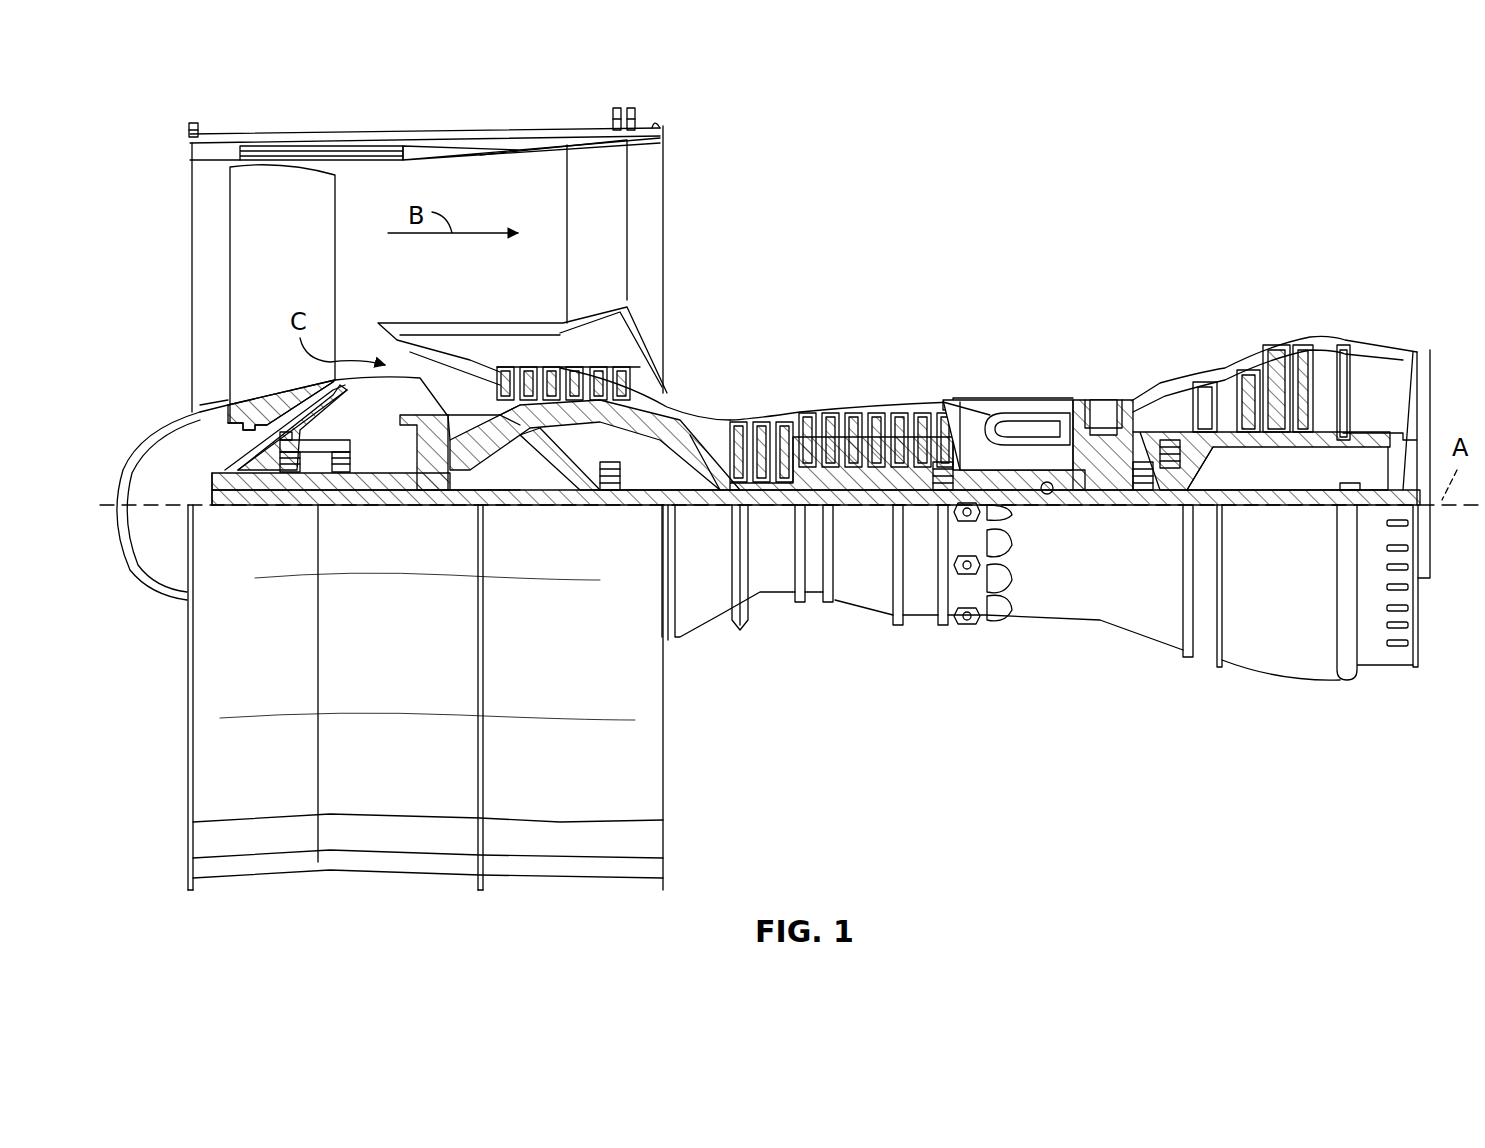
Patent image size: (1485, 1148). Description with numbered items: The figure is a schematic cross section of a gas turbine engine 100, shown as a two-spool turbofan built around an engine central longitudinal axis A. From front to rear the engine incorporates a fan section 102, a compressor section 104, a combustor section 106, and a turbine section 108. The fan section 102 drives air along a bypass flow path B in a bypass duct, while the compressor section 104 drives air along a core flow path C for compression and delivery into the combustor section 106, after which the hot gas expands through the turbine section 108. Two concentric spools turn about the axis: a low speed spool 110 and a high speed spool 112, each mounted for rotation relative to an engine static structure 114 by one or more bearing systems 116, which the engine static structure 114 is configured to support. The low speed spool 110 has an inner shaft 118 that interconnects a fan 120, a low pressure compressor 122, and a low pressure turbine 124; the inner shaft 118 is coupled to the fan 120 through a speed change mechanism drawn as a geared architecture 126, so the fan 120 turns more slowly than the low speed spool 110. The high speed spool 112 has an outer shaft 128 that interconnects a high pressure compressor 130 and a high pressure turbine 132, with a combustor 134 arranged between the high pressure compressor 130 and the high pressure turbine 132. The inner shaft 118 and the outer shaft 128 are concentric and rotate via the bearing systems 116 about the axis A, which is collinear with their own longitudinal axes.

The gas turbine engine 100 is at (1238, 170).
The fan section 102 is at (262, 128).
The compressor section 104 is at (853, 360).
The combustor section 106 is at (1020, 365).
The turbine section 108 is at (1167, 345).
The low speed spool 110 is at (884, 510).
The high speed spool 112 is at (938, 462).
The engine static structure 114 is at (923, 622).
The bearing systems 116 is at (292, 458).
The inner shaft 118 is at (677, 498).
The fan 120 is at (316, 260).
The low pressure compressor 122 is at (575, 378).
The low pressure turbine 124 is at (1270, 360).
The geared architecture 126 is at (432, 470).
The outer shaft 128 is at (1048, 497).
The high pressure compressor 130 is at (845, 478).
The high pressure turbine 132 is at (1105, 398).
The combustor 134 is at (1030, 428).